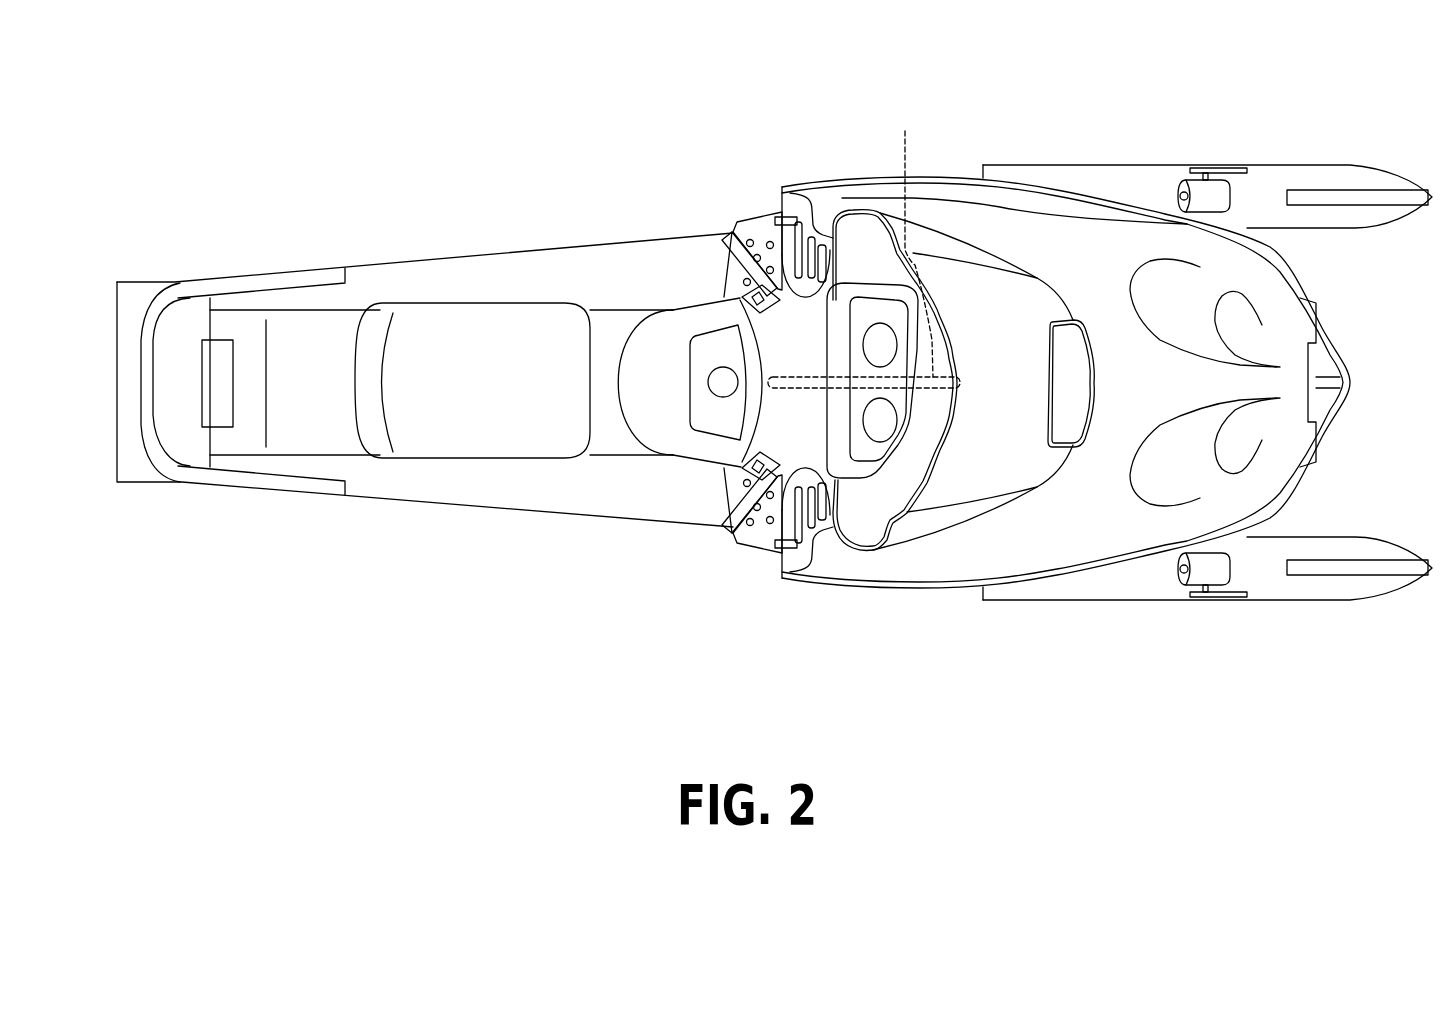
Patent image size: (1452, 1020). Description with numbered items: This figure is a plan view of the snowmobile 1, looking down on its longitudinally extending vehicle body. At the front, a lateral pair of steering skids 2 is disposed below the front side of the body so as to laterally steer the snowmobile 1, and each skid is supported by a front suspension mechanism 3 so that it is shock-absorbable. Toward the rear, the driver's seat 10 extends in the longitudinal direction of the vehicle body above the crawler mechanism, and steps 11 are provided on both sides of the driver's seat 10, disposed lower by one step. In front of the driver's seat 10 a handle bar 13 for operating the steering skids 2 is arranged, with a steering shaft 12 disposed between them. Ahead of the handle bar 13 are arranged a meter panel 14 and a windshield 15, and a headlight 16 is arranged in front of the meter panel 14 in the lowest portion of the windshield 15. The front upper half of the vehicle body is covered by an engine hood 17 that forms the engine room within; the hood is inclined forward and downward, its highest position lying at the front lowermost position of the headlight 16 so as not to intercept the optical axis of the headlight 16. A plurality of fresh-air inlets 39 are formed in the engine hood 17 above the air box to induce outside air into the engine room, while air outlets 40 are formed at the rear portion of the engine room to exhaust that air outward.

The snowmobile 1 is at (704, 111).
The steering skids 2 is at (1342, 173).
The front suspension mechanisms 3 is at (1217, 193).
The driver's seat 10 is at (472, 445).
The steps 11 is at (483, 265).
The steering shaft 12 is at (864, 246).
The handle bar 13 is at (733, 523).
The meter panel 14 is at (867, 462).
The windshield 15 is at (997, 317).
The headlight 16 is at (1065, 427).
The engine hood 17 is at (1108, 243).
The fresh-air inlets 39 is at (1133, 278).
The air outlets 40 is at (816, 235).